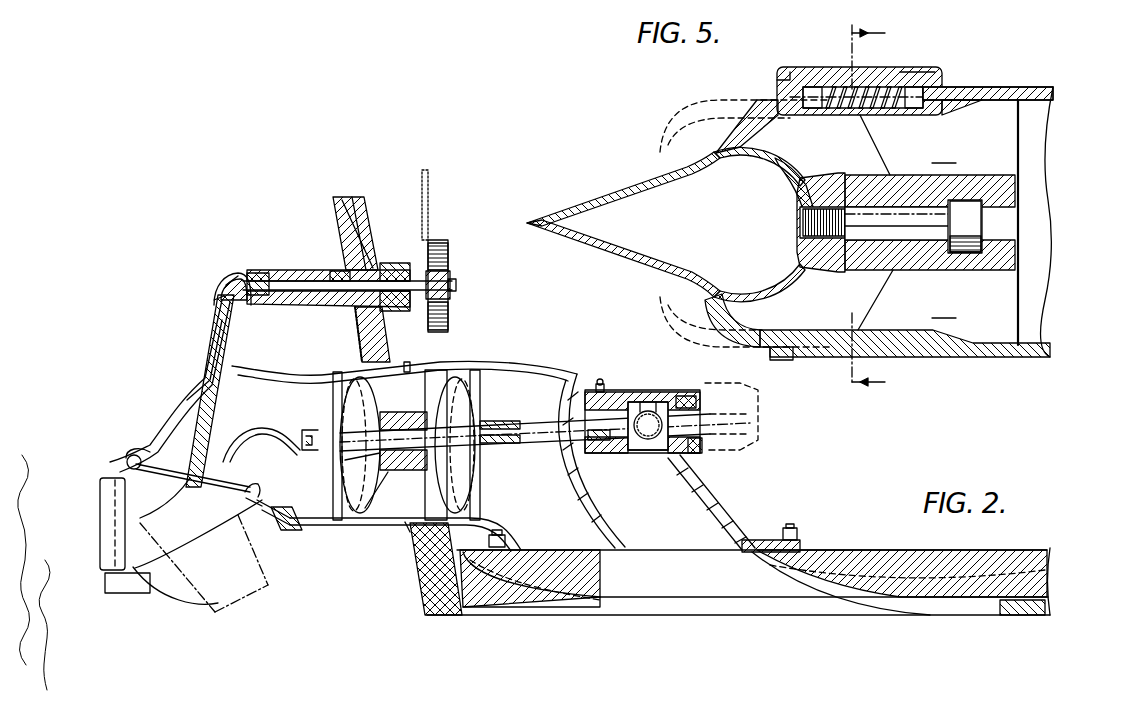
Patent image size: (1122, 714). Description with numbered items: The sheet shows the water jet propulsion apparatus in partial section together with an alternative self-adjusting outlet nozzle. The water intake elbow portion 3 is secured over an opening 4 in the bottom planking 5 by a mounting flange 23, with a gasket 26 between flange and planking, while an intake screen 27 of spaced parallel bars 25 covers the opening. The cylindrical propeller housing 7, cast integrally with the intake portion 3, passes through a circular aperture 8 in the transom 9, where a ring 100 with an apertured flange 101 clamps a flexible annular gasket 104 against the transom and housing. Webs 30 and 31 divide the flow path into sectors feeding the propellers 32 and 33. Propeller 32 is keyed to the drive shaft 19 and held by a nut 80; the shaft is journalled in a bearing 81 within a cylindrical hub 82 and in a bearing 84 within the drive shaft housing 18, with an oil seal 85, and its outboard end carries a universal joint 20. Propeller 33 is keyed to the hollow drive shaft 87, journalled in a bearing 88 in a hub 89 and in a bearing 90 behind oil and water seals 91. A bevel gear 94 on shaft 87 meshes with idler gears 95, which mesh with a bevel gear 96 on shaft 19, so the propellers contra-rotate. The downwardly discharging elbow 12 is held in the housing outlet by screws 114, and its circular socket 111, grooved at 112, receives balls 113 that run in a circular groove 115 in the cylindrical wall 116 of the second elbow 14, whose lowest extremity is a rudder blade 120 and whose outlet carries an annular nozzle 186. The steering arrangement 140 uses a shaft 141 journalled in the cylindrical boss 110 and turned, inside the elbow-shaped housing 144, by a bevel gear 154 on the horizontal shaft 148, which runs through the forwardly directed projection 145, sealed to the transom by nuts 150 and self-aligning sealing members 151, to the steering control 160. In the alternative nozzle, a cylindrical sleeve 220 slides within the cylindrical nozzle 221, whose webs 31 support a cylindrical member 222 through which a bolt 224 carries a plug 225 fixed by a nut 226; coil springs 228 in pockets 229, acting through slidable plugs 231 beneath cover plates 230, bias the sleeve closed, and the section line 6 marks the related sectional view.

In FIG. 2, the water intake elbow portion 3 is at (712, 494).
In FIG. 2, the opening 4 is at (584, 592).
In FIG. 2, the bottom planking 5 is at (1045, 584).
In FIG. 5, the section line 6 is at (880, 208).
In FIG. 2, the propeller housing 7 is at (429, 350).
In FIG. 2, the circular aperture 8 is at (407, 362).
In FIG. 2, the transom 9 is at (425, 585).
In FIG. 2, the first downwardly discharging cast elbow 12 is at (160, 413).
In FIG. 2, the second elbow 14 is at (232, 562).
In FIG. 2, the drive shaft housing 18 is at (628, 392).
In FIG. 2, the drive shaft 19 is at (378, 452).
In FIG. 2, the universal joint 20 is at (752, 445).
In FIG. 2, the mounting flange 23 is at (765, 540).
In FIG. 2, the bars 25 is at (642, 615).
In FIG. 2, the gasket 26 is at (797, 537).
In FIG. 2, the intake screen 27 is at (705, 613).
In FIG. 2, the web 30 is at (596, 498).
In FIG. 5, the web 31 is at (944, 230).
In FIG. 2, the web 31 is at (458, 465).
In FIG. 2, the propeller 32 is at (347, 403).
In FIG. 2, the propeller 33 is at (452, 445).
In FIG. 2, the nut 80 is at (318, 442).
In FIG. 2, the bearing 81 is at (347, 464).
In FIG. 2, the cylindrical hub 82 is at (366, 510).
In FIG. 2, the bearing 84 is at (684, 396).
In FIG. 2, the oil seal 85 is at (703, 448).
In FIG. 2, the hollow drive shaft 87 is at (540, 424).
In FIG. 2, the bearing 88 is at (512, 420).
In FIG. 2, the hub 89 is at (498, 420).
In FIG. 2, the bearing 90 is at (603, 386).
In FIG. 2, the oil and water seals 91 is at (596, 446).
In FIG. 2, the bevel gear 94 is at (636, 452).
In FIG. 2, the contra-rotatable idler gears 95 is at (652, 440).
In FIG. 2, the bevel gear 96 is at (652, 400).
In FIG. 2, the ring 100 is at (405, 532).
In FIG. 2, the apertured flange 101 is at (410, 535).
In FIG. 2, the flexible flat annular gasket 104 is at (362, 345).
In FIG. 2, the cylindrical boss 110 is at (208, 370).
In FIG. 2, the circular socket 111 is at (133, 456).
In FIG. 2, the groove 112 is at (127, 461).
In FIG. 2, the balls 113 is at (125, 471).
In FIG. 2, the screws 114 is at (285, 530).
In FIG. 2, the circular groove 115 is at (248, 496).
In FIG. 2, the cylindrical wall 116 is at (250, 486).
In FIG. 2, the rudder blade 120 is at (137, 594).
In FIG. 2, the steering arrangement 140 is at (216, 280).
In FIG. 2, the shaft 141 is at (205, 393).
In FIG. 2, the elbow-shaped housing 144 is at (216, 299).
In FIG. 2, the forwardly directed projection 145 is at (296, 270).
In FIG. 2, the horizontal extending shaft 148 is at (270, 290).
In FIG. 2, the nuts 150 is at (336, 273).
In FIG. 2, the semispherical self-aligning sealing members 151 is at (352, 225).
In FIG. 2, the bevel gear 154 is at (230, 280).
In FIG. 2, the steering control 160 is at (455, 268).
In FIG. 2, the annular nozzle 186 is at (103, 574).
In FIG. 5, the cylindrical sleeve 220 is at (940, 340).
In FIG. 5, the cylindrical nozzle 221 is at (1000, 353).
In FIG. 5, the cylindrical member 222 is at (997, 184).
In FIG. 5, the bolt 224 is at (937, 223).
In FIG. 5, the plug 225 is at (798, 166).
In FIG. 5, the nut 226 is at (803, 197).
In FIG. 5, the coil springs 228 is at (840, 87).
In FIG. 5, the pockets 229 is at (790, 74).
In FIG. 5, the cover plates 230 is at (905, 72).
In FIG. 5, the plugs 231 is at (810, 97).